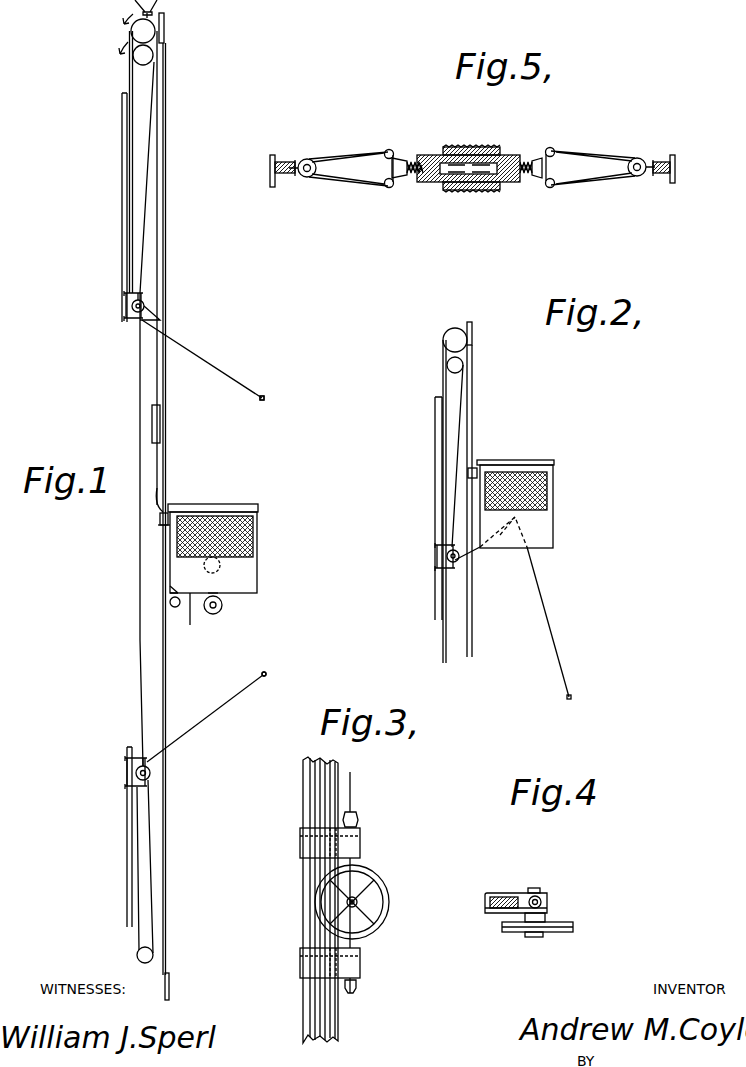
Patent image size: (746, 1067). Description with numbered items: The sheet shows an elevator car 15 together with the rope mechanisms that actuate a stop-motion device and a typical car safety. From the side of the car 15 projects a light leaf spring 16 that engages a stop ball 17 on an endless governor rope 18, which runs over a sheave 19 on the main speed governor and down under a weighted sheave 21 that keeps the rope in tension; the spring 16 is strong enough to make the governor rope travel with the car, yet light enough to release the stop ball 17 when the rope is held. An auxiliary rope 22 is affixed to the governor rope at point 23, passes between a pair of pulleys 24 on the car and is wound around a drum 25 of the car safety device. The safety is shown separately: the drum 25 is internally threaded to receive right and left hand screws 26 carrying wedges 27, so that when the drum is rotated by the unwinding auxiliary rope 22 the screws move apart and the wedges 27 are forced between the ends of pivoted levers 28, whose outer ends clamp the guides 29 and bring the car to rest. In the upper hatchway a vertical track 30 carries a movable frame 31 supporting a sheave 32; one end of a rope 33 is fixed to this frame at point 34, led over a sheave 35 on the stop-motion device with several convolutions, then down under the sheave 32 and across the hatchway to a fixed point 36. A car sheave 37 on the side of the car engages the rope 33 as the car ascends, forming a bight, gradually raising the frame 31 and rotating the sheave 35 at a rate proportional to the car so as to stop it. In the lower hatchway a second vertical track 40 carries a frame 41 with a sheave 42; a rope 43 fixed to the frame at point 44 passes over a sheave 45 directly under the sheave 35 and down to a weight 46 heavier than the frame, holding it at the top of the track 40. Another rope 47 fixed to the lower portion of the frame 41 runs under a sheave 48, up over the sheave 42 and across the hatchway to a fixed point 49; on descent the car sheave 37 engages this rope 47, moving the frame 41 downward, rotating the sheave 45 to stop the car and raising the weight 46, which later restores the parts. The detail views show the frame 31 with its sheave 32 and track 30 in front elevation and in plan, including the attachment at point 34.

In FIG. 1, the elevator car 15 is at (248, 565).
In FIG. 2, the elevator car 15 is at (542, 520).
In FIG. 1, the light leaf spring 16 is at (160, 490).
In FIG. 1, the stop ball 17 is at (158, 517).
In FIG. 1, the governor rope 18 is at (167, 685).
In FIG. 2, the governor rope 18 is at (473, 648).
In FIG. 1, the sheave 19 is at (165, 33).
In FIG. 2, the sheave 19 is at (472, 337).
In FIG. 1, the sheave 21 is at (170, 988).
In FIG. 1, the auxiliary rope 22 is at (196, 619).
In FIG. 1, the point of attachment 23 is at (167, 597).
In FIG. 1, the pulleys 24 is at (170, 587).
In FIG. 1, the drum 25 is at (220, 610).
In FIG. 5, the drum 25 is at (473, 147).
In FIG. 5, the right and left hand screws 26 is at (408, 155).
In FIG. 5, the wedges 27 is at (397, 168).
In FIG. 5, the pivoted levers 28 is at (342, 177).
In FIG. 5, the guides 29 is at (280, 163).
In FIG. 1, the vertical track 30 is at (123, 197).
In FIG. 2, the vertical track 30 is at (435, 447).
In FIG. 3, the vertical track 30 is at (308, 792).
In FIG. 4, the vertical track 30 is at (508, 893).
In FIG. 1, the movable frame 31 is at (127, 292).
In FIG. 2, the movable frame 31 is at (437, 547).
In FIG. 3, the movable frame 31 is at (360, 860).
In FIG. 4, the movable frame 31 is at (490, 913).
In FIG. 1, the sheave 32 is at (148, 310).
In FIG. 2, the sheave 32 is at (447, 563).
In FIG. 3, the sheave 32 is at (387, 898).
In FIG. 4, the sheave 32 is at (553, 933).
In FIG. 1, the rope 33 is at (145, 210).
In FIG. 2, the rope 33 is at (442, 380).
In FIG. 1, the point of attachment 34 is at (140, 295).
In FIG. 3, the point of attachment 34 is at (355, 815).
In FIG. 4, the point of attachment 34 is at (540, 900).
In FIG. 1, the sheave 35 is at (133, 30).
In FIG. 2, the sheave 35 is at (453, 333).
In FIG. 1, the fixed point 36 is at (267, 398).
In FIG. 2, the fixed point 36 is at (572, 697).
In FIG. 1, the car sheave 37 is at (218, 570).
In FIG. 2, the car sheave 37 is at (513, 523).
In FIG. 1, the vertical track 40 is at (128, 902).
In FIG. 1, the frame 41 is at (138, 760).
In FIG. 1, the sheave 42 is at (150, 775).
In FIG. 1, the rope 43 is at (137, 377).
In FIG. 1, the point of attachment 44 is at (142, 758).
In FIG. 1, the sheave 45 is at (142, 60).
In FIG. 1, the weight 46 is at (160, 425).
In FIG. 1, the rope 47 is at (207, 723).
In FIG. 1, the sheave 48 is at (137, 957).
In FIG. 1, the fixed point 49 is at (267, 677).